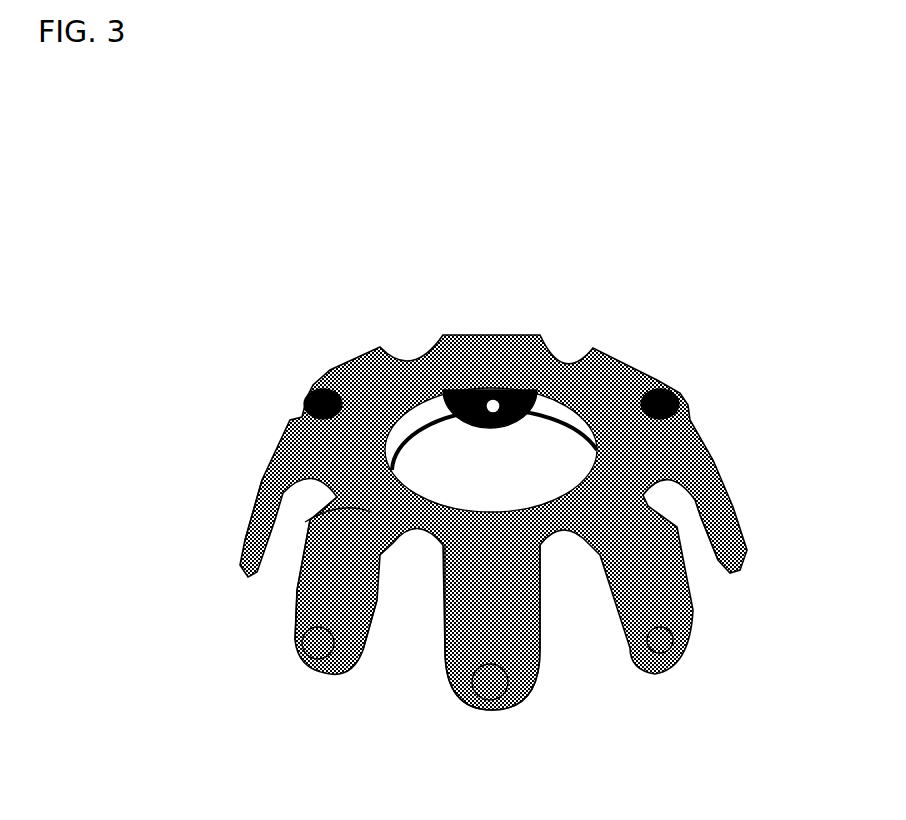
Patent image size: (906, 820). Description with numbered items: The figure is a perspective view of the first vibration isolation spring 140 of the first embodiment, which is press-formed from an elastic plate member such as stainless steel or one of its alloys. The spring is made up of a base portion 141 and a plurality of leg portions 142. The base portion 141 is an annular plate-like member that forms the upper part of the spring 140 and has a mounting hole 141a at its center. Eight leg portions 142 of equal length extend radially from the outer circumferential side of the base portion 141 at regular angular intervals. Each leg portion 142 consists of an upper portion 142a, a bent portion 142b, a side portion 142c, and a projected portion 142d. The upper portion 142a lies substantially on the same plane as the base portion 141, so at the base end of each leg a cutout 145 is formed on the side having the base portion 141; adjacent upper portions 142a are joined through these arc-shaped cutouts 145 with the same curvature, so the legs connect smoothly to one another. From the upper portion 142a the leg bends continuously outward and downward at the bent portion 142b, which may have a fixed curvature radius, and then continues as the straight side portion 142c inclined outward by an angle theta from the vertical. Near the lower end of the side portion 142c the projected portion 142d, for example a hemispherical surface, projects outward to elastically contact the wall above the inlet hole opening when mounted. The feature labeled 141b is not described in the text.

The first vibration isolation spring 140 is at (716, 192).
The base portion 141 is at (300, 250).
The mounting hole 141a is at (492, 405).
The protruding portion 141b is at (520, 440).
The leg portion 142 is at (172, 702).
The upper portion 142a is at (305, 533).
The bent portion 142b is at (352, 538).
The side portion 142c is at (335, 598).
The projected portion 142d is at (312, 645).
The cutout 145 is at (418, 553).